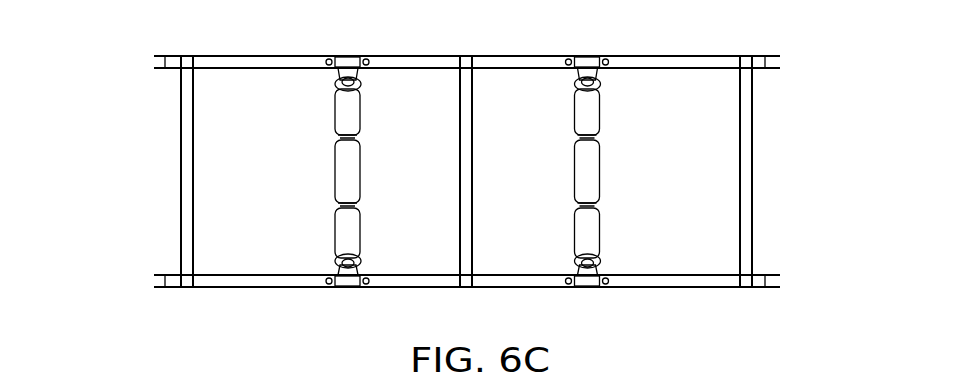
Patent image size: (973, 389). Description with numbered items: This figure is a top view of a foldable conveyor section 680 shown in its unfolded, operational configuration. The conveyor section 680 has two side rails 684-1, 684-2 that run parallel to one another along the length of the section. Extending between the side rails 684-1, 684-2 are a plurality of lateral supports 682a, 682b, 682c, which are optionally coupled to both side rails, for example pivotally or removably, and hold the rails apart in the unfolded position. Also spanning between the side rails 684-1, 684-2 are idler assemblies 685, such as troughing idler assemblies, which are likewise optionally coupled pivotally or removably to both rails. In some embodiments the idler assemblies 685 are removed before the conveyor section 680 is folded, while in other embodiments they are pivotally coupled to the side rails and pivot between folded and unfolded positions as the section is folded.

The foldable conveyor section 680 is at (523, 175).
The lateral support 682a is at (181, 133).
The lateral support 682b is at (473, 155).
The lateral support 682c is at (753, 219).
The side rail 684-1 is at (410, 56).
The side rail 684-2 is at (283, 288).
The idler assembly 685 is at (615, 212).